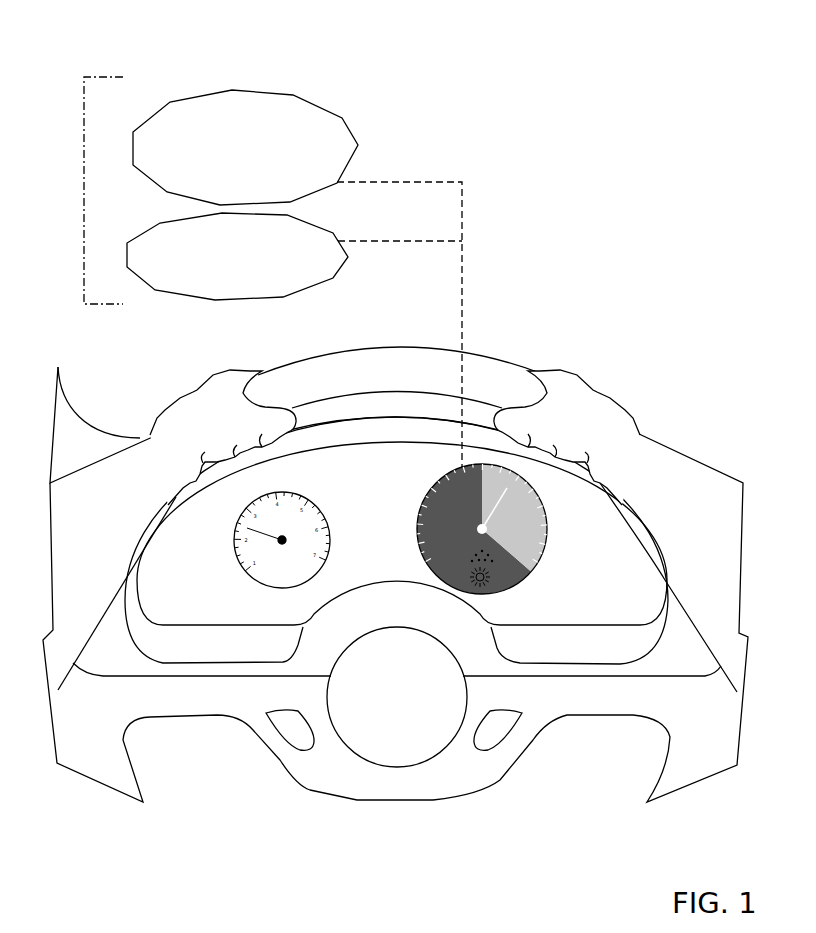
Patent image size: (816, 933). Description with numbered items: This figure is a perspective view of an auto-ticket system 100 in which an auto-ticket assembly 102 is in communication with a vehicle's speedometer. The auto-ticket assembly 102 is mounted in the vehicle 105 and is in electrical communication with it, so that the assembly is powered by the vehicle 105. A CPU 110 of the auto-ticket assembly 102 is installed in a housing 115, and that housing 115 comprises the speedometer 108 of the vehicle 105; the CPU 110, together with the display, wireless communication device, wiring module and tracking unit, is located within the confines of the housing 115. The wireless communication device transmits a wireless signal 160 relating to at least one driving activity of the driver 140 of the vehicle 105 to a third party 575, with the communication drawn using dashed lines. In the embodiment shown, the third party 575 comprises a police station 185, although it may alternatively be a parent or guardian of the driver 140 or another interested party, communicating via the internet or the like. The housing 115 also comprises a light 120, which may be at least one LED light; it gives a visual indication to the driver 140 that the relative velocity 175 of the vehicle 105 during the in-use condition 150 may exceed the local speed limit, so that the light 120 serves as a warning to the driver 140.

The auto-ticket system 100 is at (583, 88).
The auto-ticket assembly 102 is at (608, 115).
The in-use condition 150 is at (634, 147).
The wireless signal 160 is at (468, 262).
The third party 575 is at (272, 176).
The police station 185 is at (234, 184).
The CPU 110 is at (447, 459).
The housing 115 is at (479, 459).
The speedometer 108 is at (479, 460).
The light 120 is at (458, 577).
The relative velocity 175 is at (512, 492).
The driver 140 is at (652, 493).
The vehicle 105 is at (76, 745).